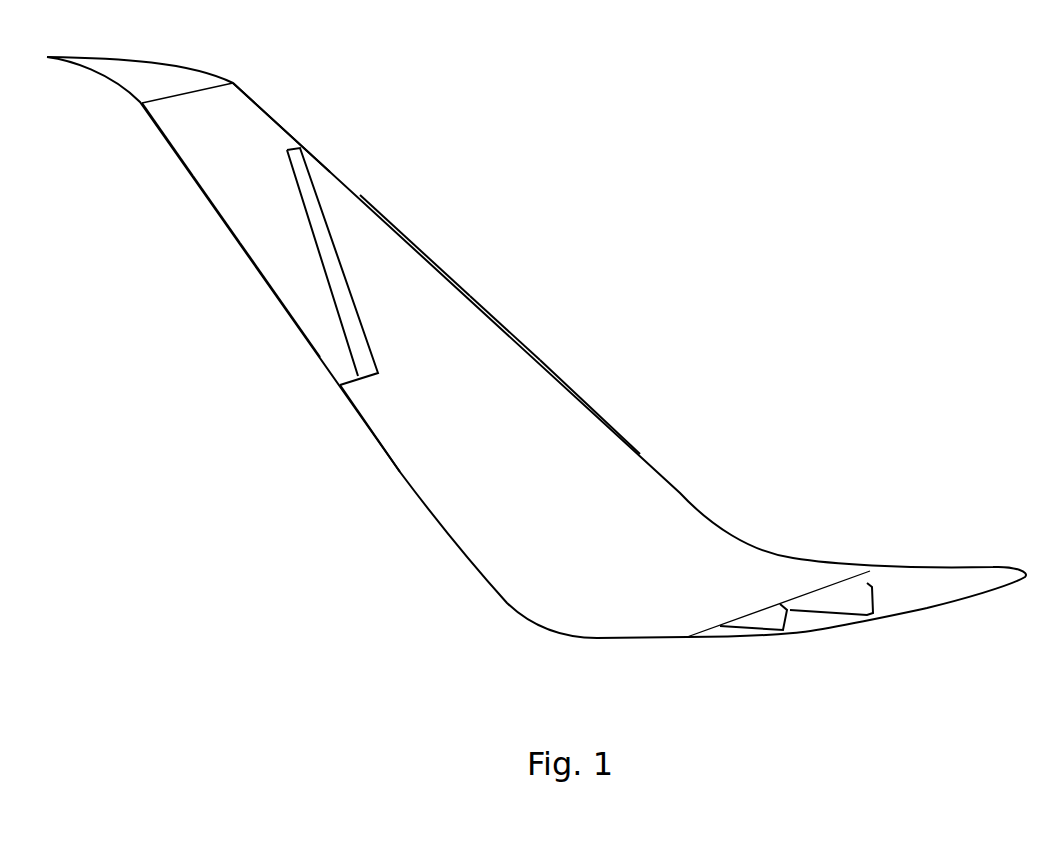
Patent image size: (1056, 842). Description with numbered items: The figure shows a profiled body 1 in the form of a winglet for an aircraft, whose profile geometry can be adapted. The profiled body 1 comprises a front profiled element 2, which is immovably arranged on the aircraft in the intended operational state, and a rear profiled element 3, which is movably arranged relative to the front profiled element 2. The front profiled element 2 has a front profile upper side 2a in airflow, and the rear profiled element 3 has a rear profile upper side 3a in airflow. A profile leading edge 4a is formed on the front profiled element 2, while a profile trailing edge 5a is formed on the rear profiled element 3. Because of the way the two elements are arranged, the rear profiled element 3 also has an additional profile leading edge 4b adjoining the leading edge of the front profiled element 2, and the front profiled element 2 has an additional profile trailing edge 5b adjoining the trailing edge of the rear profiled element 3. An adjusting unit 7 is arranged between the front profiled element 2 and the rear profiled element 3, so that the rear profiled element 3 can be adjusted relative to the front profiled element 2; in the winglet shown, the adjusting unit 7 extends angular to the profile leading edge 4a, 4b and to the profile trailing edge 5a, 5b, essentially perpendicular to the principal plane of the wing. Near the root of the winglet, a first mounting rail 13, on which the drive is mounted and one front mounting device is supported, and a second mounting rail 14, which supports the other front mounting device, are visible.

The profiled body 1 is at (529, 91).
The front profiled element 2 is at (472, 333).
The front profile upper side 2a is at (562, 422).
The rear profiled element 3 is at (193, 132).
The rear profile upper side 3a is at (230, 180).
The profile leading edge 4a is at (427, 260).
The additional profile leading edge 4b is at (270, 115).
The profile trailing edge 5a is at (257, 268).
The additional profile trailing edge 5b is at (397, 468).
The adjusting unit 7 is at (312, 171).
The first mounting rail 13 is at (850, 595).
The second mounting rail 14 is at (767, 615).